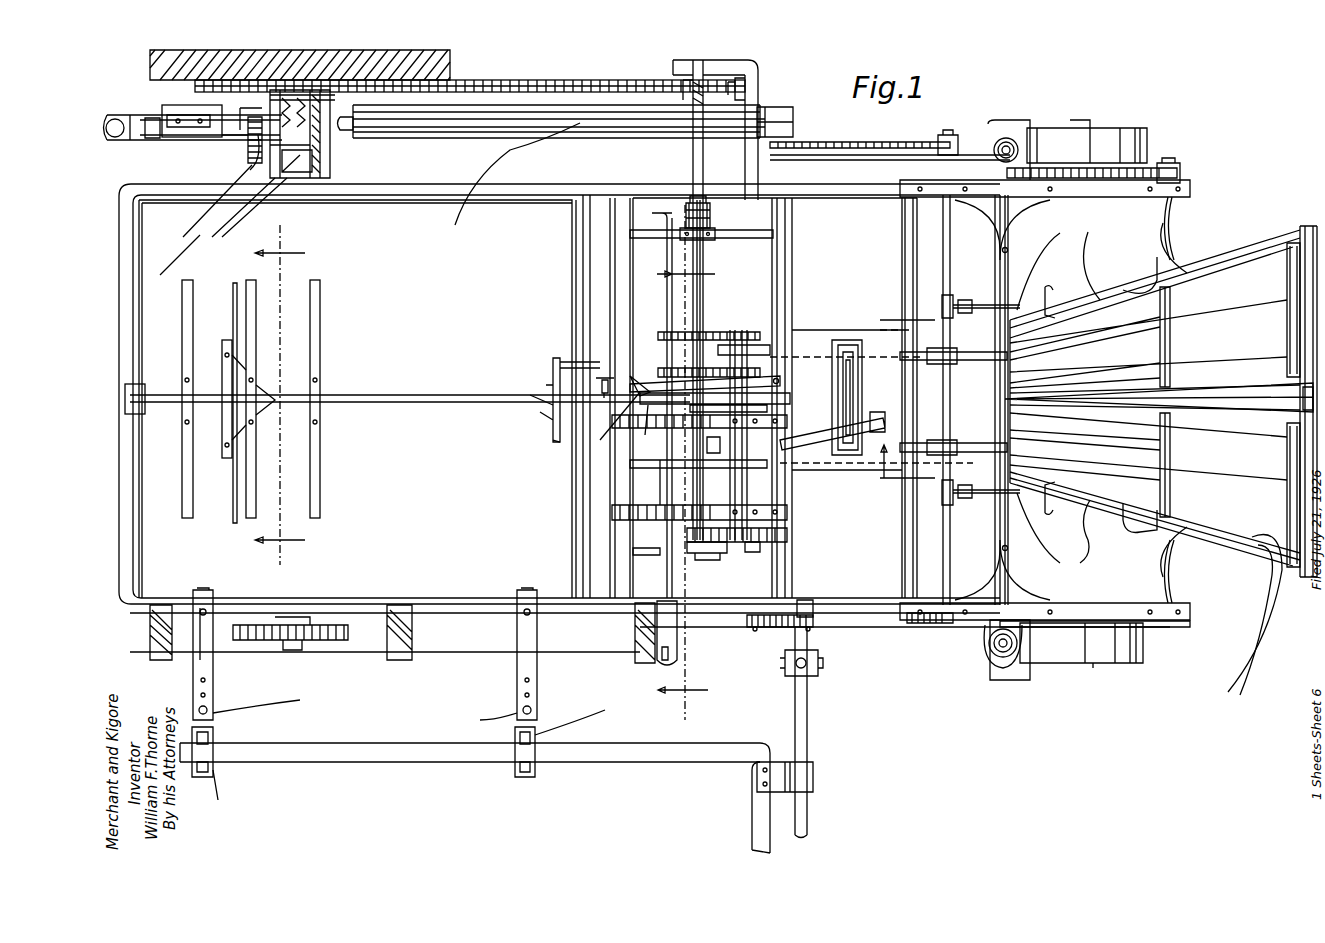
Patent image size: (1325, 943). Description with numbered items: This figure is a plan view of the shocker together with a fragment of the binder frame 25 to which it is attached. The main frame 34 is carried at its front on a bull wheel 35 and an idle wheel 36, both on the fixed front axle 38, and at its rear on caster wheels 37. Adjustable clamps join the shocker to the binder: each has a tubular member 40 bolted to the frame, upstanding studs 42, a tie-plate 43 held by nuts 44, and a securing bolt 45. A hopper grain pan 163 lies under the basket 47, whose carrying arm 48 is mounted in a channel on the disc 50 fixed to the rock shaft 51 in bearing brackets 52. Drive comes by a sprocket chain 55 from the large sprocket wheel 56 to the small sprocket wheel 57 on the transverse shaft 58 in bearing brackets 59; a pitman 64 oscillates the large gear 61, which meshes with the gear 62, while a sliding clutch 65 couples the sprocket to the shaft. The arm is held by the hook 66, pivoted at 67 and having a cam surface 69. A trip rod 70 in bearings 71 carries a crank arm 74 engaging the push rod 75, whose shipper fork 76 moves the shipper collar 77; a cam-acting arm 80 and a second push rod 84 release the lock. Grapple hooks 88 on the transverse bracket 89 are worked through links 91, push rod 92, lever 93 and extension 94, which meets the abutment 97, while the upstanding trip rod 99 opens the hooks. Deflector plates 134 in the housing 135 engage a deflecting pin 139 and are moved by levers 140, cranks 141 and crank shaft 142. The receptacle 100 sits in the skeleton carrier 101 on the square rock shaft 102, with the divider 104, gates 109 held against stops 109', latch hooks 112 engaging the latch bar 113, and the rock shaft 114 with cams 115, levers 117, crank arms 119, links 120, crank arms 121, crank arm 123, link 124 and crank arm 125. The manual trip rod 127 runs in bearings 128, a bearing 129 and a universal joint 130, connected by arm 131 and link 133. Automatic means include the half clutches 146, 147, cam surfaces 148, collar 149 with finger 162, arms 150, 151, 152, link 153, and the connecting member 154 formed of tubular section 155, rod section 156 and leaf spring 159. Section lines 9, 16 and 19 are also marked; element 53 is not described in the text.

The section line 9 is at (280, 393).
The section line 16 is at (686, 462).
The section line 19 is at (1028, 465).
The binder frame 25 is at (318, 753).
The main frame 34 is at (640, 190).
The bull wheel 35 is at (455, 70).
The idle wheel 36 is at (262, 640).
The caster wheels 37 is at (1150, 145).
The front axle 38 is at (290, 112).
The tubular clamp member 40 is at (225, 668).
The screw-threaded studs 42 is at (213, 737).
The tie-plate 43 is at (213, 752).
The nuts 44 is at (414, 760).
The nut-equipped bolt 45 is at (365, 709).
The basket 47 is at (322, 352).
The carrying arm 48 is at (445, 385).
The disc 50 is at (790, 398).
The rock shaft 51 is at (780, 505).
The bearing brackets 52 is at (787, 422).
The bearing 53 is at (135, 414).
The sprocket chain 55 is at (595, 88).
The large sprocket wheel 56 is at (215, 95).
The small sprocket wheel 57 is at (758, 92).
The transverse shaft 58 is at (703, 290).
The bearing brackets 59 is at (748, 330).
The large gear 61 is at (787, 536).
The gear 62 is at (755, 552).
The pitman 64 is at (705, 560).
The sliding clutch 65 is at (716, 215).
The hook 66 is at (645, 375).
The pivot 67 is at (782, 381).
The cam surface 69 is at (614, 427).
The trip rod 70 is at (458, 652).
The bearings 71 is at (148, 625).
The crank-acting arm 74 is at (670, 656).
The push rod 75 is at (677, 640).
The shipper fork 76 is at (655, 399).
The shipper collar 77 is at (720, 240).
The cam-acting arm 80 is at (604, 375).
The push rod 84 is at (650, 490).
The grapple hooks 88 is at (237, 500).
The transverse bracket 89 is at (225, 455).
The links 91 is at (265, 415).
The push rod 92 is at (535, 408).
The transverse lever 93 is at (556, 445).
The pivotal extension 94 is at (565, 345).
The abutment 97 is at (320, 452).
The trip rod 99 is at (880, 412).
The shock-forming receptacle 100 is at (1255, 613).
The skeleton carrier 101 is at (1247, 620).
The square rock shaft 102 is at (1180, 215).
The divider 104 is at (1161, 401).
The gates 109 is at (1133, 401).
The stops 109' is at (1155, 401).
The latch hooks 112 is at (970, 345).
The latch bar 113 is at (1060, 352).
The rock shaft 114 is at (950, 240).
The cams 115 is at (920, 365).
The levers 117 is at (1011, 400).
The crank arms 119 is at (1050, 400).
The links 120 is at (985, 295).
The crank arms 121 is at (956, 300).
The crank arm 123 is at (928, 630).
The link 124 is at (972, 640).
The crank arm 125 is at (1205, 622).
The trip rod 127 is at (807, 697).
The bearings 128 is at (813, 775).
The bearing 129 is at (805, 600).
The universal joint 130 is at (818, 668).
The crank-acting arm 131 is at (770, 622).
The link 133 is at (865, 630).
The deflector plates 134 is at (855, 390).
The housing 135 is at (852, 345).
The deflecting pin 139 is at (649, 433).
The levers 140 is at (770, 350).
The cranks 141 is at (740, 340).
The crank shaft 142 is at (847, 420).
The sliding half clutch 146 is at (330, 128).
The half clutch 147 is at (335, 97).
The cam surfaces 148 is at (235, 194).
The fixed collar 149 is at (330, 168).
The crank-acting arm 150 is at (200, 136).
The crank-acting arm 151 is at (900, 148).
The crank-acting arm 152 is at (1130, 180).
The link 153 is at (905, 180).
The connecting member 154 is at (552, 180).
The tubular section 155 is at (560, 128).
The rod section 156 is at (226, 178).
The leaf spring 159 is at (137, 118).
The cam-acting finger 162 is at (169, 276).
The hopper grain pan 163 is at (421, 514).